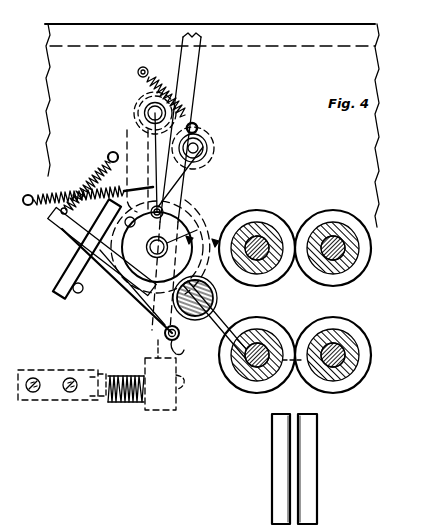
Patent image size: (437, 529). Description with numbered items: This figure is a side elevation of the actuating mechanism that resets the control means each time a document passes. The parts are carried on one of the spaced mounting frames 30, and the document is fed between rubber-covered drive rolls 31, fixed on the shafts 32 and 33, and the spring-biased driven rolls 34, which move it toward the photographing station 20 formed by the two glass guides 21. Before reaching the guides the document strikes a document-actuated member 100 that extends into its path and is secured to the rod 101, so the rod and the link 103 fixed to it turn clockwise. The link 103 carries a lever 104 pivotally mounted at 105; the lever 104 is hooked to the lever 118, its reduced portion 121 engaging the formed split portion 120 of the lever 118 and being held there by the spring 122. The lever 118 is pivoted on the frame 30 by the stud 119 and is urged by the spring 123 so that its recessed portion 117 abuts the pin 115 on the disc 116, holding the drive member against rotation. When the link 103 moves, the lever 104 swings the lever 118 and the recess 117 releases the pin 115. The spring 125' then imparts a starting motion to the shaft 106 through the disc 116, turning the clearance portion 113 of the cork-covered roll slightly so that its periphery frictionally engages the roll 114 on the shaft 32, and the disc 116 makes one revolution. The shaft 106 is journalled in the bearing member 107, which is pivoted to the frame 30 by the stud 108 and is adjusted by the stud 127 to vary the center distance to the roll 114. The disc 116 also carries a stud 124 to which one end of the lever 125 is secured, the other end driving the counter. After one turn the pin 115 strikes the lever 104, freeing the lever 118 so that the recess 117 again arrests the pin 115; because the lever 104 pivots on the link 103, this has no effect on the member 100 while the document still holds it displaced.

The mounting frame 30 is at (62, 56).
The lever 125 is at (188, 181).
The spring 125' is at (20, 185).
The stud 108 is at (151, 110).
The spring 123 is at (190, 111).
The stud 119 is at (209, 155).
The lever 118 is at (200, 163).
The bearing member 107 is at (120, 140).
The stud 124 is at (165, 206).
The lever 104 is at (134, 300).
The shaft 106 is at (208, 204).
The clearance portion 113 is at (252, 208).
The rod 101 is at (214, 302).
The link 103 is at (181, 340).
The disc 116 is at (165, 334).
The recessed portion 117 is at (81, 293).
The pin 115 is at (60, 240).
The formed portion 120 is at (69, 267).
The reduced portion 121 is at (46, 209).
The spring 122 is at (106, 161).
The stud 127 is at (130, 410).
The pivot 105 is at (154, 342).
The shaft 32 is at (265, 235).
The roll 114 is at (300, 208).
The shaft 33 is at (256, 376).
The document-actuated member 100 is at (285, 368).
The drive roll 31 is at (272, 328).
The driven roll 34 is at (343, 329).
The glass guide 21 is at (282, 455).
The photographing station 20 is at (296, 488).